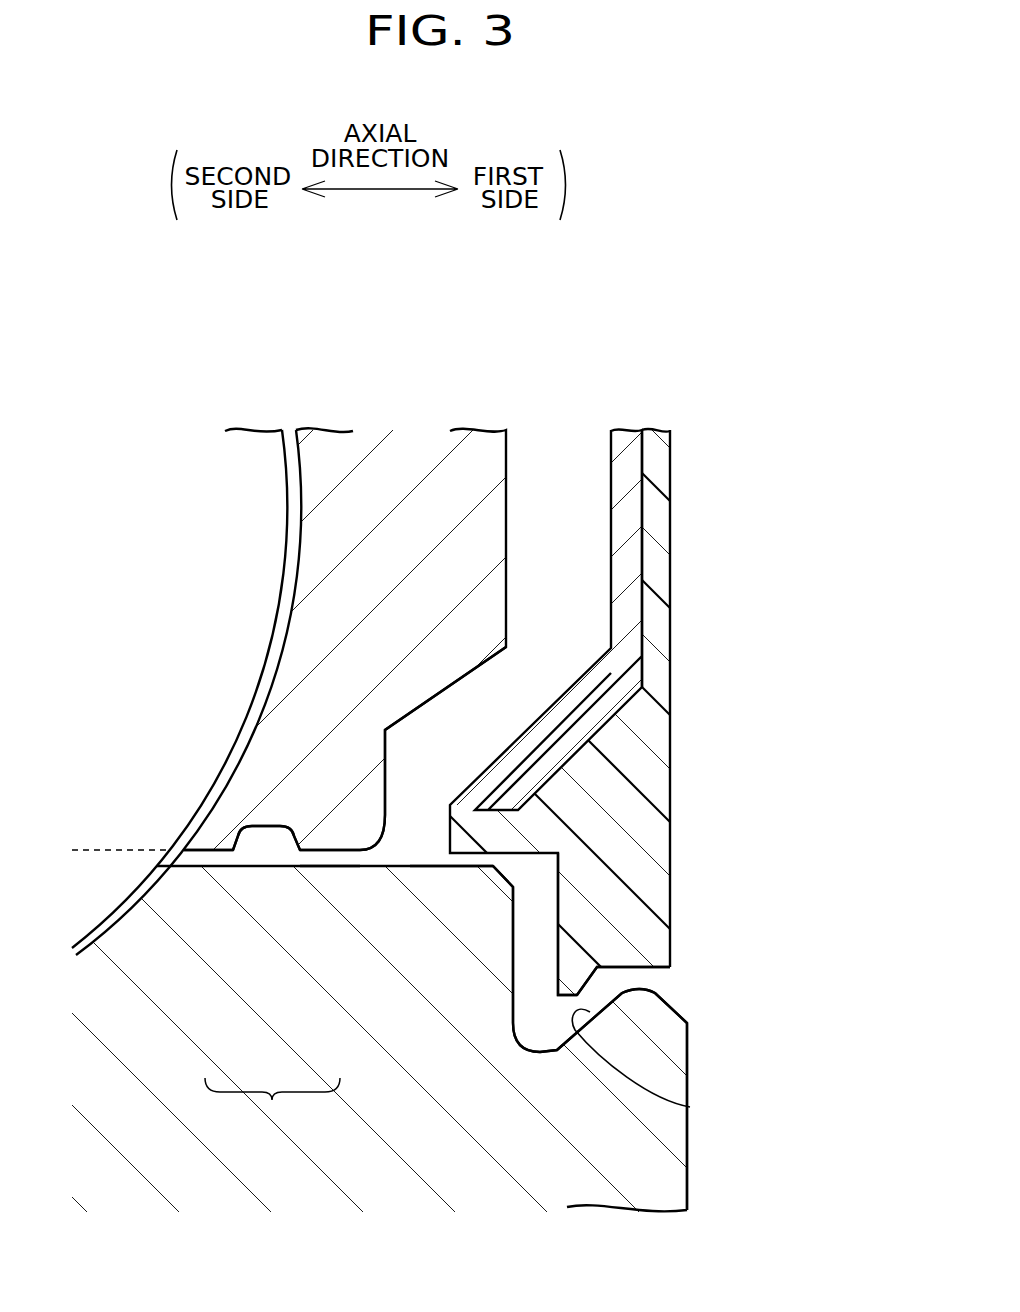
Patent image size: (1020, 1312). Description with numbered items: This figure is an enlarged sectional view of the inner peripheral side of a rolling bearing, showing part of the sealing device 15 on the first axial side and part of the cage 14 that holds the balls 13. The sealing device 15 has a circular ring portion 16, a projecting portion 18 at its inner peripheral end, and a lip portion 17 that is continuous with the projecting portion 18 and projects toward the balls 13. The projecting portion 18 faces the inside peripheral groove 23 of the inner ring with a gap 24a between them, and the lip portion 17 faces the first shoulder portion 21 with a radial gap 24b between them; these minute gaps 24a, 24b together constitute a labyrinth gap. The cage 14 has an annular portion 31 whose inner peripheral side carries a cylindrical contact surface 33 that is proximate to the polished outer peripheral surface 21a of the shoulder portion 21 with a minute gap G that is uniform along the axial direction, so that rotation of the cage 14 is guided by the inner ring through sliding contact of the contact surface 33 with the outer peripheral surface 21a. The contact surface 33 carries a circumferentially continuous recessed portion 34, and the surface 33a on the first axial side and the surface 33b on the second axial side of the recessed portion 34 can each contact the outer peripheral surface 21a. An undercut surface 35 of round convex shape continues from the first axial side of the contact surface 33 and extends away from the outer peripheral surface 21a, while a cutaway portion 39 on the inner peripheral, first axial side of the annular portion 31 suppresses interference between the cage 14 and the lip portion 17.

The balls 13 is at (162, 460).
The annular portion 31 is at (366, 465).
The cage 14 is at (483, 424).
The sealing device 15 is at (692, 489).
The circular ring portion 16 is at (657, 555).
The lip portion 17 is at (500, 835).
The projecting portion 18 is at (640, 968).
The first shoulder portion 21 is at (470, 960).
The outer peripheral surface 21a is at (415, 915).
The inside peripheral groove 23 is at (690, 1107).
The gap 24a is at (559, 914).
The radial gap 24b is at (469, 881).
The contact surface 33 is at (272, 1112).
The surface on the first axial side 33a is at (310, 852).
The surface on the second axial side 33b is at (217, 852).
The recessed portion 34 is at (260, 828).
The undercut surface 35 is at (375, 833).
The cutaway portion 39 is at (388, 732).
The gap G is at (335, 881).